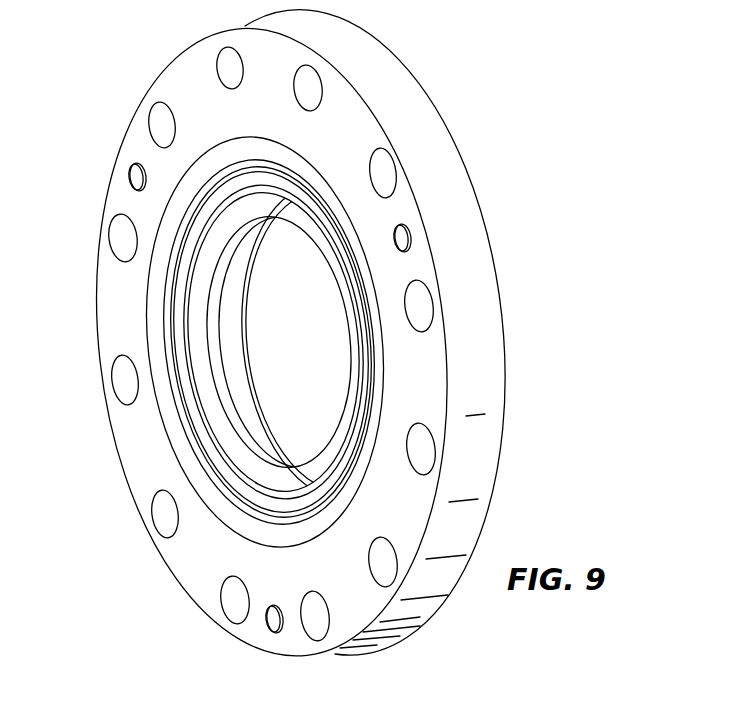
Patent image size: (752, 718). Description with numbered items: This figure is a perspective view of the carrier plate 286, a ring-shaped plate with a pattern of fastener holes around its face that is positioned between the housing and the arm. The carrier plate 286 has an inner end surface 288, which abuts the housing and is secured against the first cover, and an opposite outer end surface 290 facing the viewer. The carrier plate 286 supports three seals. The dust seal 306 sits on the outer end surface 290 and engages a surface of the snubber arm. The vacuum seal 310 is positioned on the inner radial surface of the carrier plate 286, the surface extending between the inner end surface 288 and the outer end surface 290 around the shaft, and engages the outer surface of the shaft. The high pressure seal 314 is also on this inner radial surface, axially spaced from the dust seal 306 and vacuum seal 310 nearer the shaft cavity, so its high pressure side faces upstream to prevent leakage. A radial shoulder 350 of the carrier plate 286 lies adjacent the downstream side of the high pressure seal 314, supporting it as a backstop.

The carrier plate 286 is at (328, 342).
The inner end surface 288 is at (504, 311).
The outer end surface 290 is at (155, 457).
The dust seal 306 is at (253, 527).
The vacuum seal 310 is at (222, 194).
The high pressure seal 314 is at (240, 360).
The radial shoulder 350 is at (235, 424).